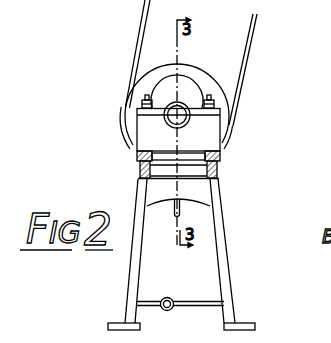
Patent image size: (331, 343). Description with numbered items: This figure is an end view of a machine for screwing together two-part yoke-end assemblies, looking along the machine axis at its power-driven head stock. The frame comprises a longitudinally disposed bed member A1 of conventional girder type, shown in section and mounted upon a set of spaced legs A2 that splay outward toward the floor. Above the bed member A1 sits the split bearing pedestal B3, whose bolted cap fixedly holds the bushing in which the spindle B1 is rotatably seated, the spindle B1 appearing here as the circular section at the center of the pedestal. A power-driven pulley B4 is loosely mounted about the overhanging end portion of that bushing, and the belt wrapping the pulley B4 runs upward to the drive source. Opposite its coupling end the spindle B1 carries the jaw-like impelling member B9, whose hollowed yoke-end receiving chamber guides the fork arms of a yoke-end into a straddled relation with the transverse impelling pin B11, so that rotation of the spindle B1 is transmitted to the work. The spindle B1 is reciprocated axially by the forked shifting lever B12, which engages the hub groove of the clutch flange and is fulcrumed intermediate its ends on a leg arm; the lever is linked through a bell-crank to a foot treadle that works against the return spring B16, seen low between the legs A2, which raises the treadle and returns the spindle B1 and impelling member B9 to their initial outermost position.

The spindle B1 is at (181, 333).
The split bearing pedestal B3 is at (185, 100).
The power-driven pulley B4 is at (195, 78).
The impelling member B9 is at (190, 117).
The transverse impelling pin B11 is at (166, 119).
The forked shifting lever B12 is at (176, 207).
The return spring B16 is at (165, 299).
The bed member A1 is at (220, 160).
The legs A2 is at (220, 225).